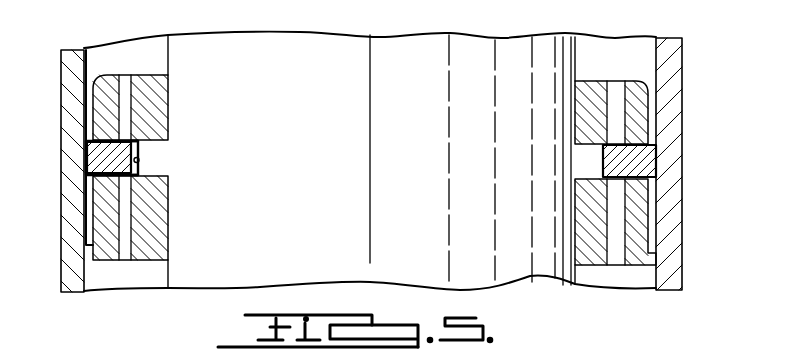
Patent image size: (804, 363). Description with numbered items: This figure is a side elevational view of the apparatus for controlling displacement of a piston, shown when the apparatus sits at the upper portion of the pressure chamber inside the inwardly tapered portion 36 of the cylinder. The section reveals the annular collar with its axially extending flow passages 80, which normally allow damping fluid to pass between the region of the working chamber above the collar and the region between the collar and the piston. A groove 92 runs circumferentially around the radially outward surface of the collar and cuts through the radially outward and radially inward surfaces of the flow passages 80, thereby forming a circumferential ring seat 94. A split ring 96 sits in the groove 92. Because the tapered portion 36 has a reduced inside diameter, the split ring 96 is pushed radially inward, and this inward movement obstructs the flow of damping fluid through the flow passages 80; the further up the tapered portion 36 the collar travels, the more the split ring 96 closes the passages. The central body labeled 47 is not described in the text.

The inwardly tapered portion 36 is at (62, 185).
The rotor shaft 47 is at (312, 228).
The flow passages 80 is at (123, 107).
The groove 92 is at (139, 151).
The circumferential ring seat 94 is at (140, 162).
The split ring 96 is at (97, 153).